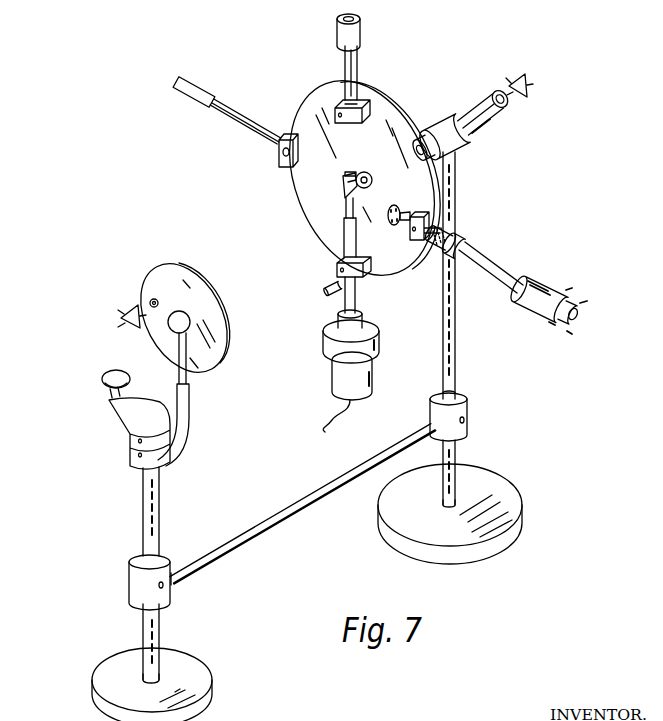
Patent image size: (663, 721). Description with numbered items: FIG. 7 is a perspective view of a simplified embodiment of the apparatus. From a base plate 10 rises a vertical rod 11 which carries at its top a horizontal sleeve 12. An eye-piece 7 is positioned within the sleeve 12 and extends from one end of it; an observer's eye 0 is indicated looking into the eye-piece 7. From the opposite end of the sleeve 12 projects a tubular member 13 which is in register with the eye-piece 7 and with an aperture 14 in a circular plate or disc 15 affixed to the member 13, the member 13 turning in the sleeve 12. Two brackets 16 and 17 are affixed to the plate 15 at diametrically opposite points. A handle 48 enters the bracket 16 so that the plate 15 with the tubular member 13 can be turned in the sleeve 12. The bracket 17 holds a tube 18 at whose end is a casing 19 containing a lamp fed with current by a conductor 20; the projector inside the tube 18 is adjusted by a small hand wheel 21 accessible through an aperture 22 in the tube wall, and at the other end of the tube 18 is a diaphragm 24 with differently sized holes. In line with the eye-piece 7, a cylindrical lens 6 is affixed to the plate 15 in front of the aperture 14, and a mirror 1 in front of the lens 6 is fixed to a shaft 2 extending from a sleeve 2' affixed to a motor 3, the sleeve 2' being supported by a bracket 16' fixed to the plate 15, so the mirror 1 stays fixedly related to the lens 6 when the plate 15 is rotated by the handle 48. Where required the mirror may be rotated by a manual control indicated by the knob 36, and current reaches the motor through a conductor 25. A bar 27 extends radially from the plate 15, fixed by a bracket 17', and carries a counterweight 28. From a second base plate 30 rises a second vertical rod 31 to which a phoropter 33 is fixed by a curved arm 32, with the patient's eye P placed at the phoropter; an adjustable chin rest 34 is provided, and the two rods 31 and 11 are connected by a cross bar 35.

The observer's eye 0 is at (517, 73).
The mirror 1 is at (342, 187).
The shaft 2 is at (312, 217).
The sleeve 2' is at (319, 265).
The motor 3 is at (327, 353).
The cylindrical lens 6 is at (372, 180).
The eye-piece 7 is at (481, 114).
The base plate 10 is at (499, 487).
The vertical rod 11 is at (453, 348).
The horizontal sleeve 12 is at (433, 120).
The tubular member 13 is at (416, 137).
The aperture 14 is at (357, 172).
The circular plate 15 is at (312, 199).
The bracket 16 is at (283, 130).
The bracket 16' is at (366, 279).
The bracket 17 is at (421, 260).
The bracket 17' is at (374, 94).
The tube 18 is at (405, 228).
The casing 19 is at (528, 299).
The conductor 20 is at (575, 325).
The hand wheel 21 is at (466, 239).
The aperture 22 is at (448, 233).
The diaphragm 24 is at (395, 207).
The conductor 25 is at (328, 432).
The bar 27 is at (347, 68).
The counterweight 28 is at (361, 34).
The second base plate 30 is at (100, 673).
The second vertical rod 31 is at (142, 512).
The curved arm 32 is at (189, 418).
The phoropter 33 is at (193, 288).
The adjustable chin rest 34 is at (102, 380).
The cross bar 35 is at (284, 513).
The manual knob 36 is at (325, 291).
The handle 48 is at (238, 119).
The observer's eye P is at (115, 313).